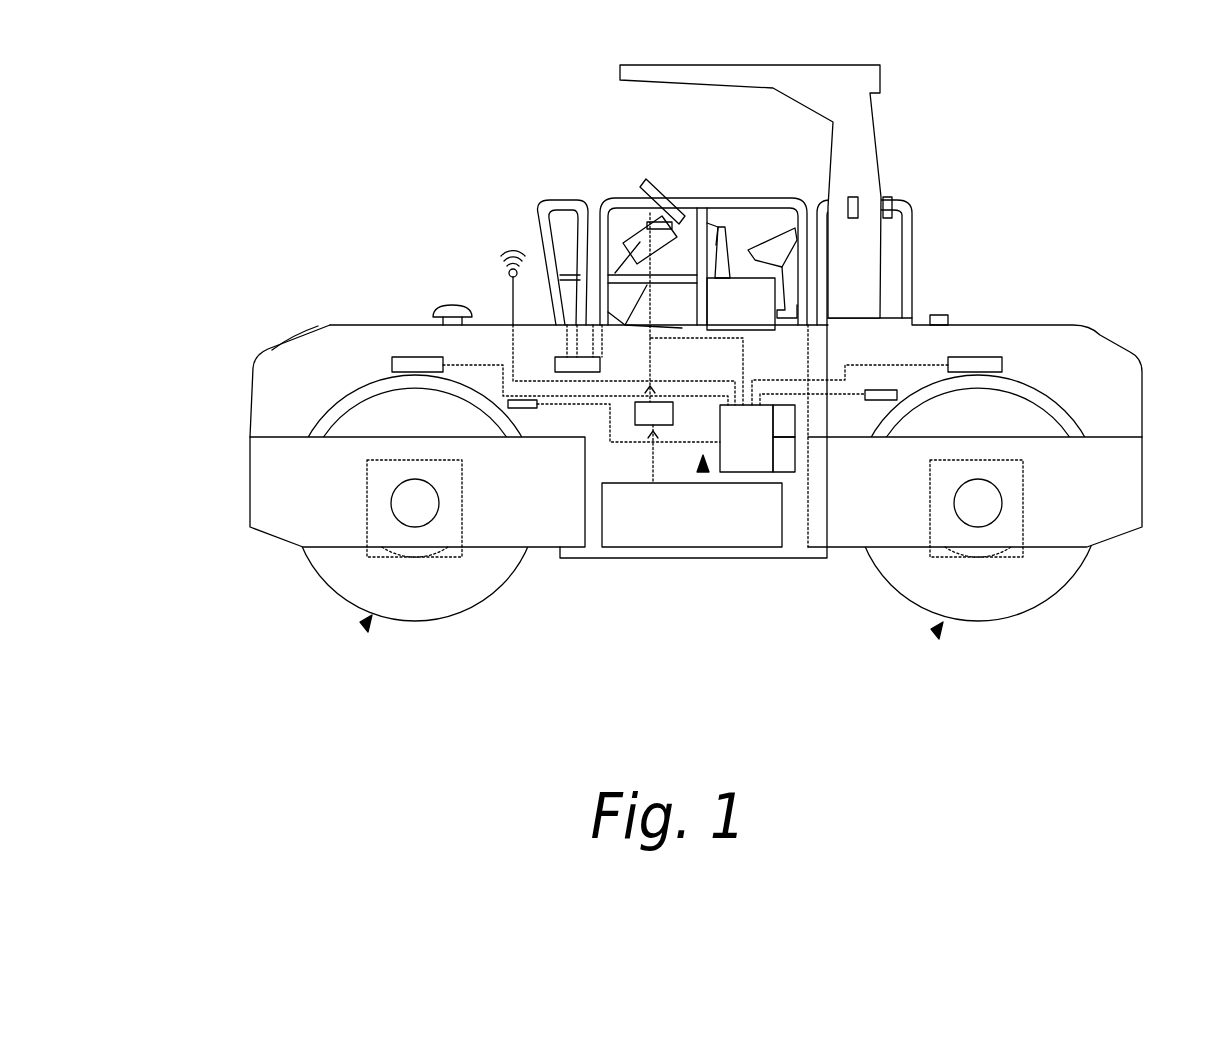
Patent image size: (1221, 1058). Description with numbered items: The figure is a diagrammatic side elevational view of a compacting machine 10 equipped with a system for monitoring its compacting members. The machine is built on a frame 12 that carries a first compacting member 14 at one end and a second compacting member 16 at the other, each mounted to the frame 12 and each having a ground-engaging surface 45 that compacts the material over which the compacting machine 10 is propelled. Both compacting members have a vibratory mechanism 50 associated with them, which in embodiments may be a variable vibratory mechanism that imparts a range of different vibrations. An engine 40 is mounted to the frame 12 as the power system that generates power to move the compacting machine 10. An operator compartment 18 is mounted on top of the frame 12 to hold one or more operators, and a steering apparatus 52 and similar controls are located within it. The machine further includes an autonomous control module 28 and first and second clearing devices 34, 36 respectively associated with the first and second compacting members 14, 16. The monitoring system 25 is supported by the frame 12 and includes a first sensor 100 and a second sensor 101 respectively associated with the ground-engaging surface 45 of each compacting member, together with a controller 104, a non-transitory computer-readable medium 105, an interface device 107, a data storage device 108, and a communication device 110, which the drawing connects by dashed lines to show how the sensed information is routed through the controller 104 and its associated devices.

The compacting machine 10 is at (1030, 160).
The frame 12 is at (595, 512).
The first compacting member 14 is at (453, 593).
The second compacting member 16 is at (1038, 575).
The operator compartment 18 is at (733, 197).
The monitoring system 25 is at (703, 473).
The autonomous control module 28 is at (648, 407).
The first clearing device 34 is at (535, 410).
The second clearing device 36 is at (883, 390).
The engine 40 is at (672, 523).
The ground-engaging surface 45 is at (366, 625).
The vibratory mechanism 50 is at (368, 517).
The steering apparatus 52 is at (643, 188).
The first sensor 100 is at (417, 357).
The second sensor 101 is at (983, 357).
The controller 104 is at (737, 440).
The non-transitory computer-readable medium 105 is at (783, 422).
The interface device 107 is at (640, 220).
The data storage device 108 is at (788, 470).
The communication device 110 is at (515, 295).